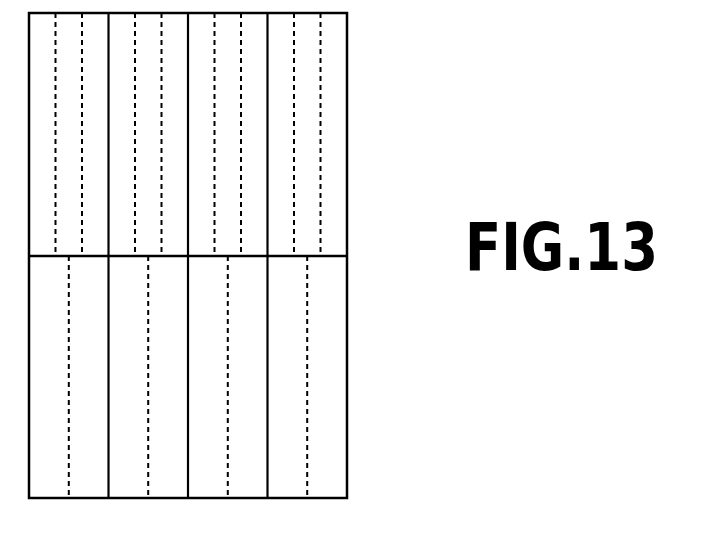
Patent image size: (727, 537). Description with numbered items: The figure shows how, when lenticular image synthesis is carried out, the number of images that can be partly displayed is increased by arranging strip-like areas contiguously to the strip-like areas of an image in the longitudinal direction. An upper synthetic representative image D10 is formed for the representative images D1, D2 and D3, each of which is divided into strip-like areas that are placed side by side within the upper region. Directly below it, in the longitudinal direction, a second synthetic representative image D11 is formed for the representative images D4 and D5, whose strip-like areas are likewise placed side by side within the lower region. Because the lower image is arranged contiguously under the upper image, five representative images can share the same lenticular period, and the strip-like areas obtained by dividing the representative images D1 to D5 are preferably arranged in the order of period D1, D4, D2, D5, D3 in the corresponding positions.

The synthetic representative image D10 is at (244, 134).
The synthetic representative image D11 is at (245, 377).
The representative image D1 is at (40, 134).
The representative image D2 is at (69, 141).
The representative image D3 is at (95, 141).
The representative image D4 is at (48, 387).
The representative image D5 is at (88, 387).